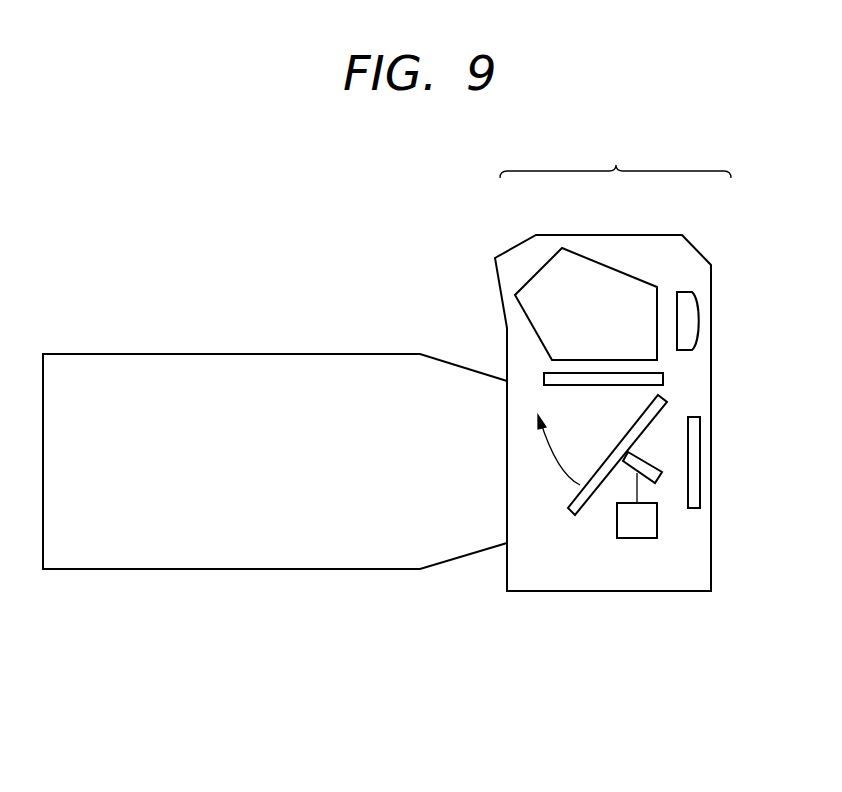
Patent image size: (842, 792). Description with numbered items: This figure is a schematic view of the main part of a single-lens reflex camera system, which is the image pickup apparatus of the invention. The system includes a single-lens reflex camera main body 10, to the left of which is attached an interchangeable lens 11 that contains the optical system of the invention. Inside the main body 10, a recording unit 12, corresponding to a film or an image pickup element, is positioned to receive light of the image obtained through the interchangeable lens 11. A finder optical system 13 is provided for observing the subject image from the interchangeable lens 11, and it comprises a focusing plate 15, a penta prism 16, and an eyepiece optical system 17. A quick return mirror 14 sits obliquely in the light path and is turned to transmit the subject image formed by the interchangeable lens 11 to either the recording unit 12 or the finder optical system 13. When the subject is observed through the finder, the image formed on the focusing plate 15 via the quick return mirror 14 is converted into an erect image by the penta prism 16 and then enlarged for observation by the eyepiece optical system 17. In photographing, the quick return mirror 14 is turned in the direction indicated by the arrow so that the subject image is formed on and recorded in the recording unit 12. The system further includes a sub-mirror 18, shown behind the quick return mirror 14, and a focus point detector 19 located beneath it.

The single-lens reflex camera main body 10 is at (681, 573).
The interchangeable lens 11 is at (272, 552).
The recording unit 12 is at (696, 493).
The finder optical system 13 is at (615, 159).
The quick return mirror 14 is at (587, 508).
The focusing plate 15 is at (567, 375).
The penta prism 16 is at (612, 285).
The eyepiece optical system 17 is at (688, 302).
The sub-mirror 18 is at (647, 452).
The focus point detector 19 is at (630, 530).